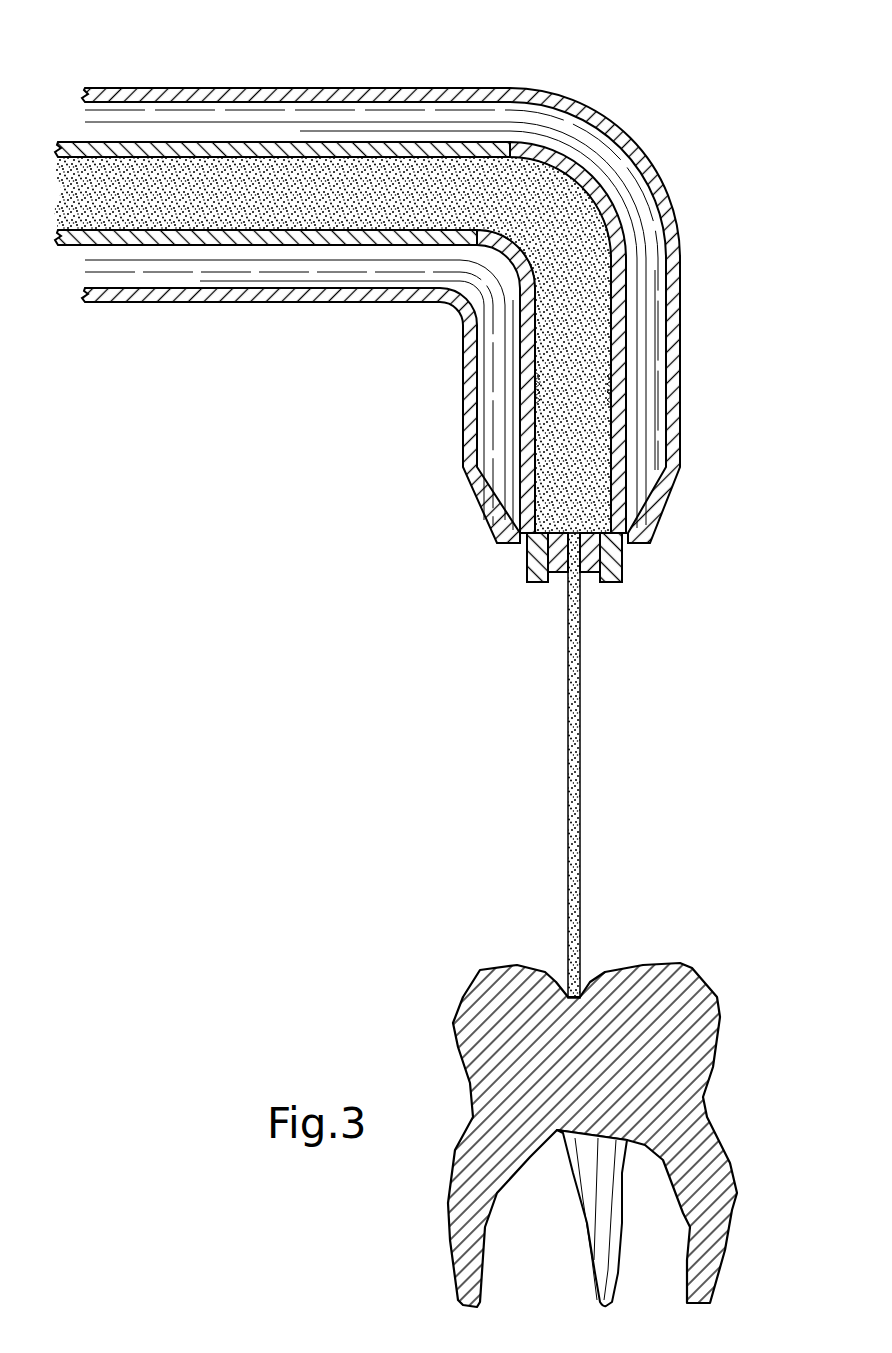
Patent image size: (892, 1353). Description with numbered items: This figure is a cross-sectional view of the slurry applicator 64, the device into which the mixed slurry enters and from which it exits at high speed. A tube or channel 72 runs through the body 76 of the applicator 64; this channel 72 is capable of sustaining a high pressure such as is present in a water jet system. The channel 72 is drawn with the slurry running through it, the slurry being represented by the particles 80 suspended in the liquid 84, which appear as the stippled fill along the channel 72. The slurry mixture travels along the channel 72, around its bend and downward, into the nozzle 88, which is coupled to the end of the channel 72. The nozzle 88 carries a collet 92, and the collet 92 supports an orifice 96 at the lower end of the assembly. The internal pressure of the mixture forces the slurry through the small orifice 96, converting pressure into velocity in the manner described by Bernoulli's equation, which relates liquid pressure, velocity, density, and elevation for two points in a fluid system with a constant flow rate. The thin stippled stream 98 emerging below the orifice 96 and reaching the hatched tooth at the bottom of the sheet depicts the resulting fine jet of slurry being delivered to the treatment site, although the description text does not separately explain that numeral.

The applicator 64 is at (401, 348).
The tube or channel 72 is at (233, 143).
The body 76 is at (497, 88).
The particles 80 is at (218, 220).
The liquid 84 is at (135, 218).
The nozzle 88 is at (620, 430).
The collet 92 is at (620, 582).
The orifice 96 is at (558, 582).
The optical fiber 98 is at (581, 795).